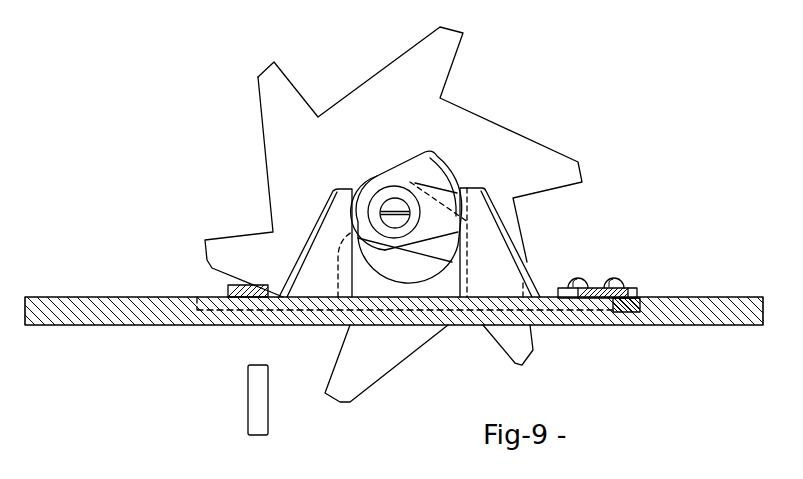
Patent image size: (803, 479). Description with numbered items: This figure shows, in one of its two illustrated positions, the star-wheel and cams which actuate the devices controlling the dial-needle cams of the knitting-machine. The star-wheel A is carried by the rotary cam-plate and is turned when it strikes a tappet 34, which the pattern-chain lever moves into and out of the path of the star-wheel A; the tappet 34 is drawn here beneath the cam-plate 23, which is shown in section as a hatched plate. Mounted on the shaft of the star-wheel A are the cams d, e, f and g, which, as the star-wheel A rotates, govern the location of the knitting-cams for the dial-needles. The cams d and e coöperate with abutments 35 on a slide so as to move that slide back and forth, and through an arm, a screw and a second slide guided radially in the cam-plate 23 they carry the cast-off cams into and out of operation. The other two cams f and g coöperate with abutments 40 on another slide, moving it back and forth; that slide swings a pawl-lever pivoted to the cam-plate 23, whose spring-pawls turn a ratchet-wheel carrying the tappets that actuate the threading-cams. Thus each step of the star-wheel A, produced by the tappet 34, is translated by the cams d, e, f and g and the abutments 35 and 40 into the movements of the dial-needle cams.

The star-wheel A is at (268, 122).
The cam-plate 23 is at (676, 298).
The tappet 34 is at (253, 397).
The abutments 35 is at (409, 242).
The abutments 40 is at (323, 203).
The cam d is at (439, 203).
The cam e is at (421, 243).
The cam f is at (386, 205).
The cam g is at (466, 163).